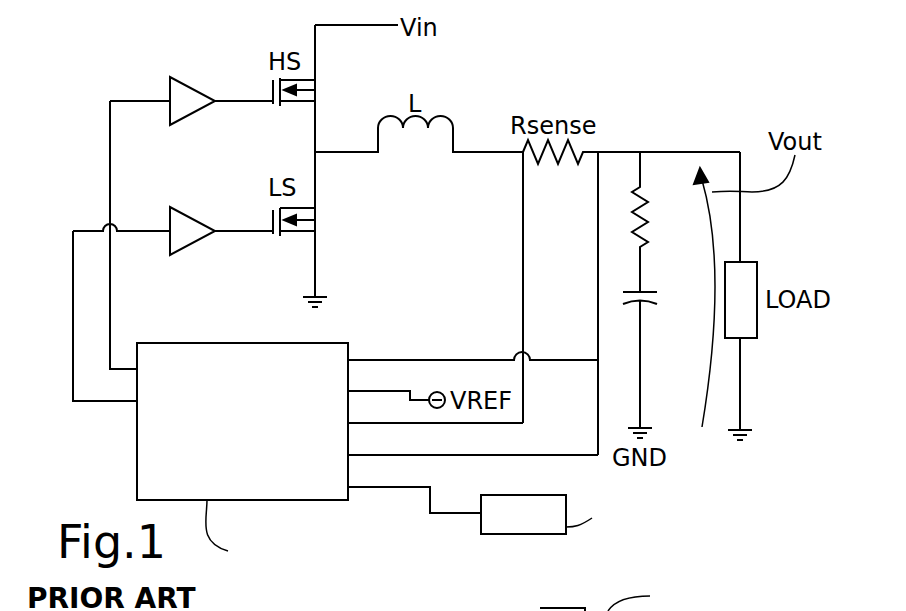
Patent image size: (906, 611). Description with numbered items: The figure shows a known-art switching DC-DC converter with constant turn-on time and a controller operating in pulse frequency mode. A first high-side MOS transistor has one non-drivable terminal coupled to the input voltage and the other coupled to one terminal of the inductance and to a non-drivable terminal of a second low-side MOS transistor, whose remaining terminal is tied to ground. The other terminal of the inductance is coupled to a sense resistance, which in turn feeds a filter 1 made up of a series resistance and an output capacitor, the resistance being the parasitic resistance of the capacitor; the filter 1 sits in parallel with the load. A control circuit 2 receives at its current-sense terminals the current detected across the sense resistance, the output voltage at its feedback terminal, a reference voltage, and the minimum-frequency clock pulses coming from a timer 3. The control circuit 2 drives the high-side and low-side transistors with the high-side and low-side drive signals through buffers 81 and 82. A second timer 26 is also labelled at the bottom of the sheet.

The buffer 81 is at (200, 88).
The buffer 82 is at (197, 220).
The filter 1 is at (674, 190).
The control circuit 2 is at (116, 458).
The timer 3 is at (533, 528).
The timer 26 is at (590, 608).